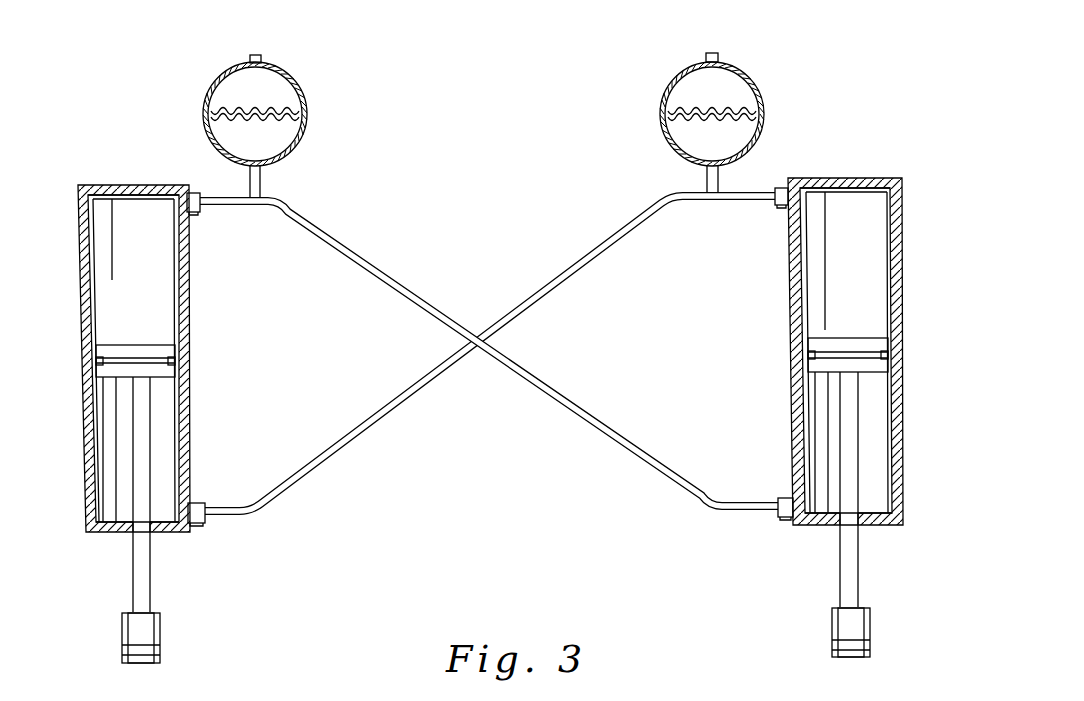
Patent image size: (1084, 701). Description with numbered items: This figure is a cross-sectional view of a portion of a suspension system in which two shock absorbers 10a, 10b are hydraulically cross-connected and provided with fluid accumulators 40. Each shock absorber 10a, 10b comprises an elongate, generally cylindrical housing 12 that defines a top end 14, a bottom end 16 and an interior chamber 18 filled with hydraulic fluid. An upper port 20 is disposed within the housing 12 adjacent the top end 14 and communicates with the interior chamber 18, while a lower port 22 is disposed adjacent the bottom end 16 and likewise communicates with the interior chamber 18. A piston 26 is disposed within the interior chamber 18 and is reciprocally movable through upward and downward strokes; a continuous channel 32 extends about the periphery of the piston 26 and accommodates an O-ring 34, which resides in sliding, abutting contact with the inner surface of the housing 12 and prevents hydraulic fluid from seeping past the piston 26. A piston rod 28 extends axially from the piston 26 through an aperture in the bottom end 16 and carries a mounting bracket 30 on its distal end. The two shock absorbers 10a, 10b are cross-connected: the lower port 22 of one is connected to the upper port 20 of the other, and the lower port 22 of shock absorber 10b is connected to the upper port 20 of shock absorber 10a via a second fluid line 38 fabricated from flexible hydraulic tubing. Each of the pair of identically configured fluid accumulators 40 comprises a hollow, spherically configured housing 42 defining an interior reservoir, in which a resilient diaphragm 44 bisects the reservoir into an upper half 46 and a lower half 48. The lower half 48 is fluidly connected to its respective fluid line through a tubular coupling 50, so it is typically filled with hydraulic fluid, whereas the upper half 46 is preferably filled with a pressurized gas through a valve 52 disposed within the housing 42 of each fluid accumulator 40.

The shock absorber 10a is at (134, 312).
The shock absorber 10b is at (859, 313).
The housing 12 is at (490, 357).
The top end 14 is at (483, 158).
The bottom end 16 is at (514, 550).
The interior chamber 18 is at (465, 357).
The upper port 20 is at (487, 221).
The lower port 22 is at (490, 509).
The piston 26 is at (493, 443).
The piston rod 28 is at (805, 566).
The mounting bracket 30 is at (496, 654).
The continuous channel 32 is at (492, 349).
The O-ring 34 is at (492, 346).
The second fluid line 38 is at (489, 353).
The fluid accumulator 40 is at (520, 96).
The housing 42 is at (483, 124).
The resilient diaphragm 44 is at (483, 85).
The upper half 46 is at (499, 77).
The lower half 48 is at (523, 135).
The tubular coupling 50 is at (484, 187).
The valve 52 is at (462, 35).